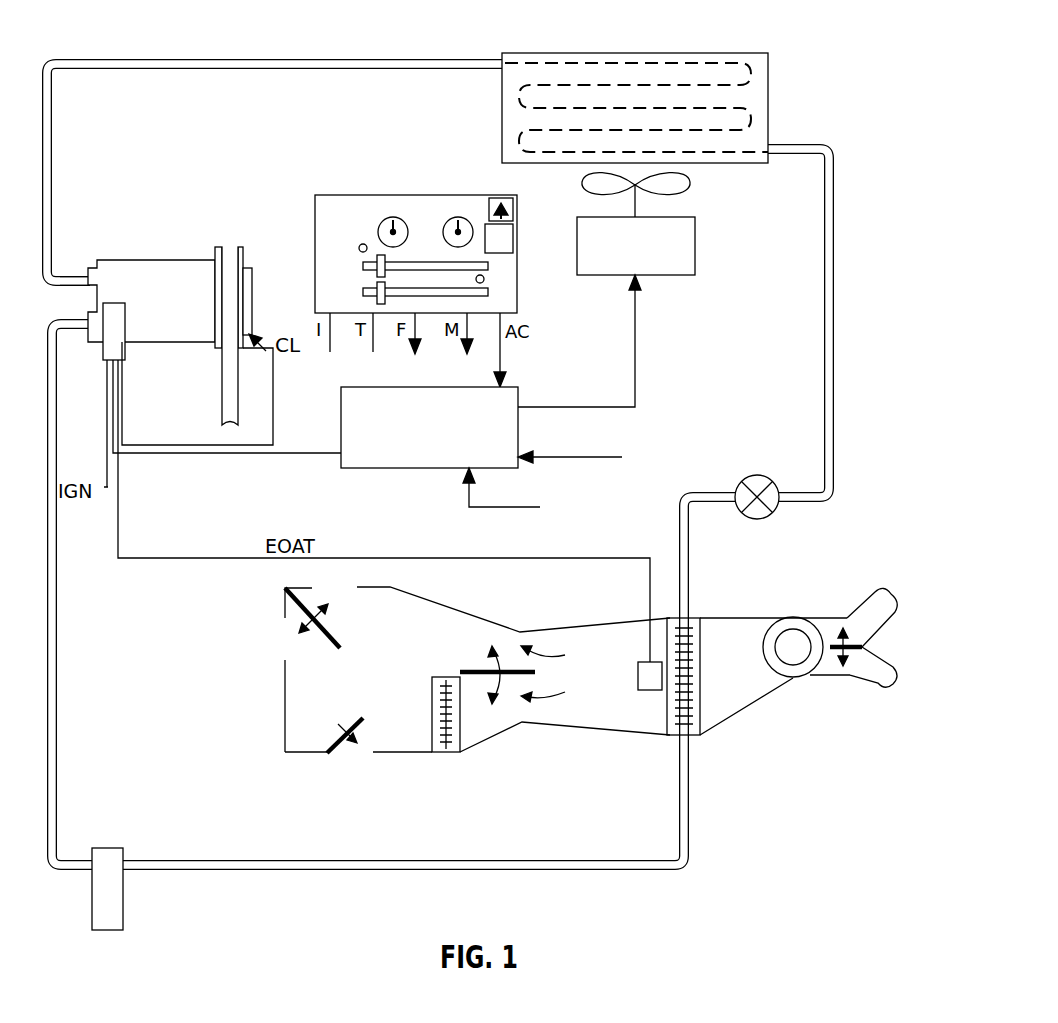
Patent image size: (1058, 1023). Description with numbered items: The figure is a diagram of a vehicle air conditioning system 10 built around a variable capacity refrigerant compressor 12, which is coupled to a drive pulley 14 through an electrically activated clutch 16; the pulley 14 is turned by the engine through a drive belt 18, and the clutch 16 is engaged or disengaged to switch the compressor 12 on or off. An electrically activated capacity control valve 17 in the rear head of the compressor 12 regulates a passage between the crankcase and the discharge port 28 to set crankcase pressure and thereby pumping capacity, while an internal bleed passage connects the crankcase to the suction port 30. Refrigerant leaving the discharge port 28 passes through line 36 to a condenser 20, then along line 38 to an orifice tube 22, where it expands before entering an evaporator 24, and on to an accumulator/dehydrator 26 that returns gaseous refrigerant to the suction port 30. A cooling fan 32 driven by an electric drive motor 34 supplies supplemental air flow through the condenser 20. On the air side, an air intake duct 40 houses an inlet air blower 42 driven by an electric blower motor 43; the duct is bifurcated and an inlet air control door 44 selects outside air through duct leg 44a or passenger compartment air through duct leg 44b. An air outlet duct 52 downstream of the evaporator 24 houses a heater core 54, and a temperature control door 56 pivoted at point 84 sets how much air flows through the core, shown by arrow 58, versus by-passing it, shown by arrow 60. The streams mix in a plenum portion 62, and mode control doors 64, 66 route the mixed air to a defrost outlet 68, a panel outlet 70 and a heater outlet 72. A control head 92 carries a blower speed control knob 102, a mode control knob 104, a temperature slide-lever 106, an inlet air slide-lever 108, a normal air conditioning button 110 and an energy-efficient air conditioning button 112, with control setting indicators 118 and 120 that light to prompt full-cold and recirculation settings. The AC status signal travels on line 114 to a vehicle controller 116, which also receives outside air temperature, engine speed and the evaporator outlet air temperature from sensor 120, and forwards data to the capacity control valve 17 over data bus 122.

The vehicle air conditioning system 10 is at (860, 123).
The variable capacity refrigerant compressor 12 is at (192, 344).
The drive pulley 14 is at (210, 252).
The electrically activated clutch 16 is at (256, 330).
The capacity control valve 17 is at (125, 327).
The drive belt 18 is at (222, 411).
The condenser 20 is at (770, 88).
The orifice tube 22 is at (757, 475).
The evaporator 24 is at (700, 690).
The accumulator/dehydrator 26 is at (123, 900).
The discharge port 28 is at (92, 262).
The suction port 30 is at (90, 338).
The cooling fan 32 is at (694, 185).
The electric drive motor 34 is at (695, 250).
The refrigerant line to condenser 36 is at (480, 68).
The line 38 is at (833, 224).
The air intake duct 40 is at (762, 705).
The inlet air blower 42 is at (818, 680).
The electric blower motor 43 is at (775, 628).
The inlet air control door 44 is at (838, 640).
The duct leg 44a is at (868, 605).
The duct leg 44b is at (865, 698).
The air outlet duct 52 is at (590, 727).
The heater core 54 is at (432, 713).
The temperature control door 56 is at (480, 645).
The arrow 58 is at (548, 690).
The arrow 60 is at (548, 648).
The plenum portion 62 is at (285, 728).
The mode control door 64 is at (342, 648).
The mode control door 66 is at (350, 722).
The defrost outlet 68 is at (357, 587).
The panel outlet 70 is at (285, 665).
The heater outlet 72 is at (373, 752).
The pivot point 84 is at (460, 670).
The control head 92 is at (465, 458).
The blower speed control knob 102 is at (380, 238).
The mode control knob 104 is at (443, 240).
The temperature slide-lever 106 is at (356, 252).
The inlet air slide-lever 108 is at (375, 287).
The normal air conditioning button 110 is at (513, 240).
The energy-efficient air conditioning button 112 is at (498, 198).
The line 114 is at (500, 340).
The vehicle controller 116 is at (341, 390).
The control setting indicator 118 is at (355, 246).
The control setting indicator / temperature sensor 120 is at (487, 281).
The data bus 122 is at (215, 453).